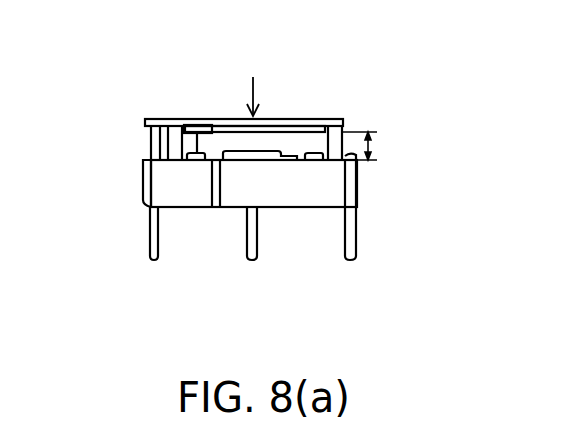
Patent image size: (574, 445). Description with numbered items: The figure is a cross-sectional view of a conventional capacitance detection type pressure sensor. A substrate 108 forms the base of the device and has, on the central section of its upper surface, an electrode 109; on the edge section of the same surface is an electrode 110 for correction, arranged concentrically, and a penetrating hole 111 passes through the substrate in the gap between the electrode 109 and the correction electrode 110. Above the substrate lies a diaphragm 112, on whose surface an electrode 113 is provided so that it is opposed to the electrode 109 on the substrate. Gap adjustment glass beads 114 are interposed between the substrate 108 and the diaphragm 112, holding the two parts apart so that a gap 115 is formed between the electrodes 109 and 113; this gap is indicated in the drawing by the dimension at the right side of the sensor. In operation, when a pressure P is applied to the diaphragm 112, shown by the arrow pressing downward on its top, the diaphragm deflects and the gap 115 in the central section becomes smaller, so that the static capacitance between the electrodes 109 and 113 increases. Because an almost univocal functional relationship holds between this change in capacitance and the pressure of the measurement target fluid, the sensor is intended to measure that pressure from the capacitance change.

The substrate 108 is at (310, 188).
The electrode 109 is at (267, 166).
The electrode for correction 110 is at (187, 120).
The penetrating hole 111 is at (213, 164).
The diaphragm 112 is at (307, 118).
The electrode 113 is at (193, 123).
The gap adjustment glass beads 114 is at (164, 136).
The gap 115 is at (378, 143).
The pressure P is at (254, 81).